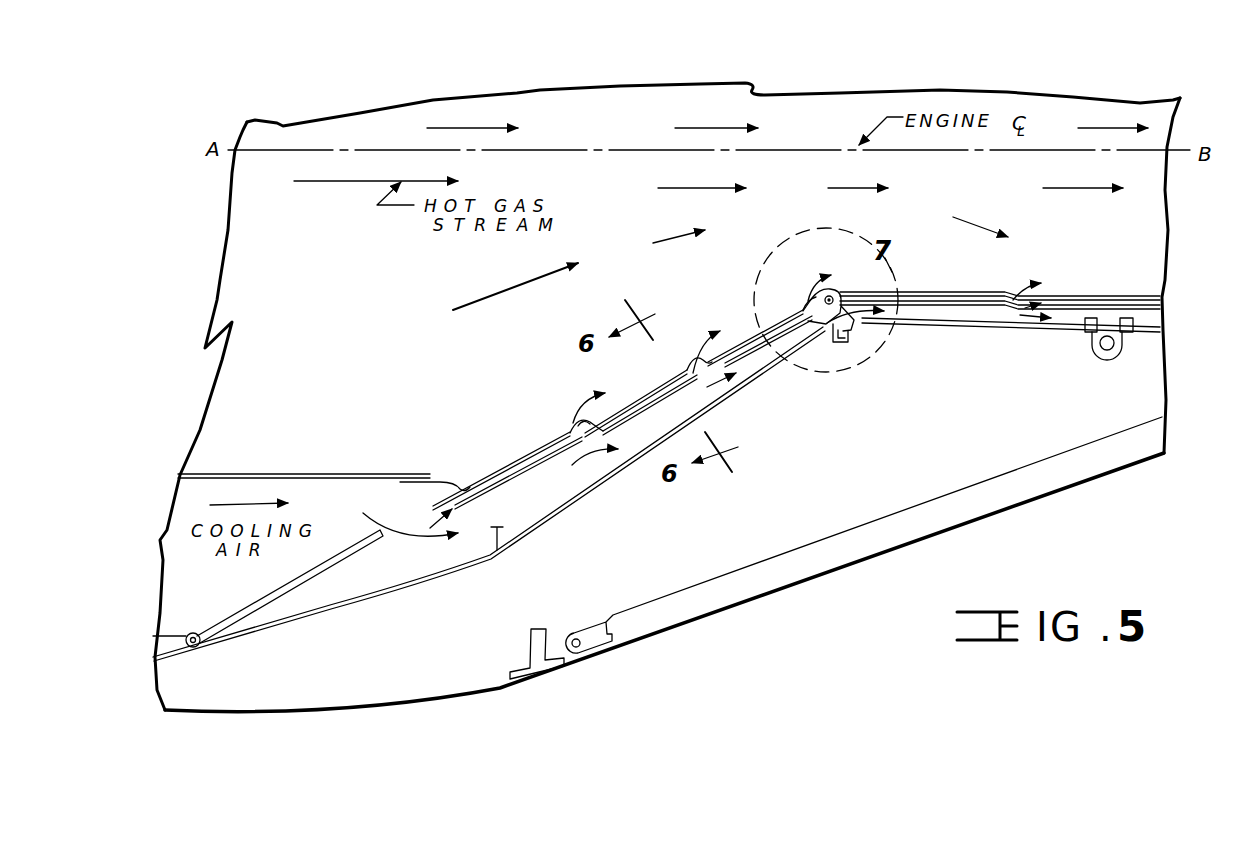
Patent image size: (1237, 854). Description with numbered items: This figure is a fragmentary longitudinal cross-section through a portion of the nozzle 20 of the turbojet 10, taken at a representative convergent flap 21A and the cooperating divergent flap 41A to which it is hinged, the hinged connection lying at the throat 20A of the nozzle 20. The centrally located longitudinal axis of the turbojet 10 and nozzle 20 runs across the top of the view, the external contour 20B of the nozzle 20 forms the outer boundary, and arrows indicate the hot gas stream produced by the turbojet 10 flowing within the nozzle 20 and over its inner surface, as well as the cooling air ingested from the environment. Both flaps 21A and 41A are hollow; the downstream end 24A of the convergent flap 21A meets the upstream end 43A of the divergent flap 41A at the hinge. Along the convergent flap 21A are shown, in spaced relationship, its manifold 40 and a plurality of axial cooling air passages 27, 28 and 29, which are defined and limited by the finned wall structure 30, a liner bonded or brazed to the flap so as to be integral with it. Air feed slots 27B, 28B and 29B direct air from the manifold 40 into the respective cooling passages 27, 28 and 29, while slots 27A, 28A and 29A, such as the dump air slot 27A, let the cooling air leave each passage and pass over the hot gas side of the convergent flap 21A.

The turbojet 10 is at (727, 77).
The nozzle 20 is at (1102, 262).
The throat 20A is at (841, 287).
The external contour 20B is at (448, 696).
The convergent flap 21A is at (553, 515).
The downstream end 24A is at (842, 333).
The cooling air passage 27 is at (511, 473).
The dump air slot 27A is at (572, 427).
The air feed slot 27B is at (455, 516).
The cooling air passage 28 is at (650, 397).
The air slot 28A is at (690, 357).
The air feed slot 28B is at (603, 431).
The cooling air passage 29 is at (757, 335).
The air slot 29A is at (802, 298).
The air feed slot 29B is at (755, 366).
The finned wall structure 30 is at (627, 397).
The manifold 40 is at (497, 550).
The divergent flap 41A is at (1003, 328).
The upstream end 43A is at (864, 327).